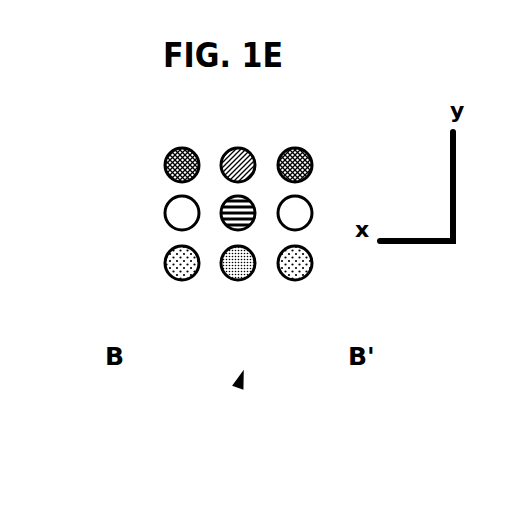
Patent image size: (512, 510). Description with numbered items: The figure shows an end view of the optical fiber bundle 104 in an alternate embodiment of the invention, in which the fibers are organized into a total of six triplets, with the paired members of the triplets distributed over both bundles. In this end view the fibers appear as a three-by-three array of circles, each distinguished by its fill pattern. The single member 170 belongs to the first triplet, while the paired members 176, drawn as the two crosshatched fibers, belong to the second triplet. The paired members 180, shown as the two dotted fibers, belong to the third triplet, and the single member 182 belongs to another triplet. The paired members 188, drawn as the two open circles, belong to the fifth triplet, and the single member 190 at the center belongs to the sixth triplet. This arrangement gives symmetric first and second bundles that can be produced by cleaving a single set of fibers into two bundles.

The paired members 176 is at (280, 163).
The single member 170 is at (238, 148).
The single member 190 is at (221, 210).
The paired members 188 is at (288, 213).
The paired members 180 is at (193, 250).
The single member 182 is at (237, 272).
The bundle 104 is at (237, 390).